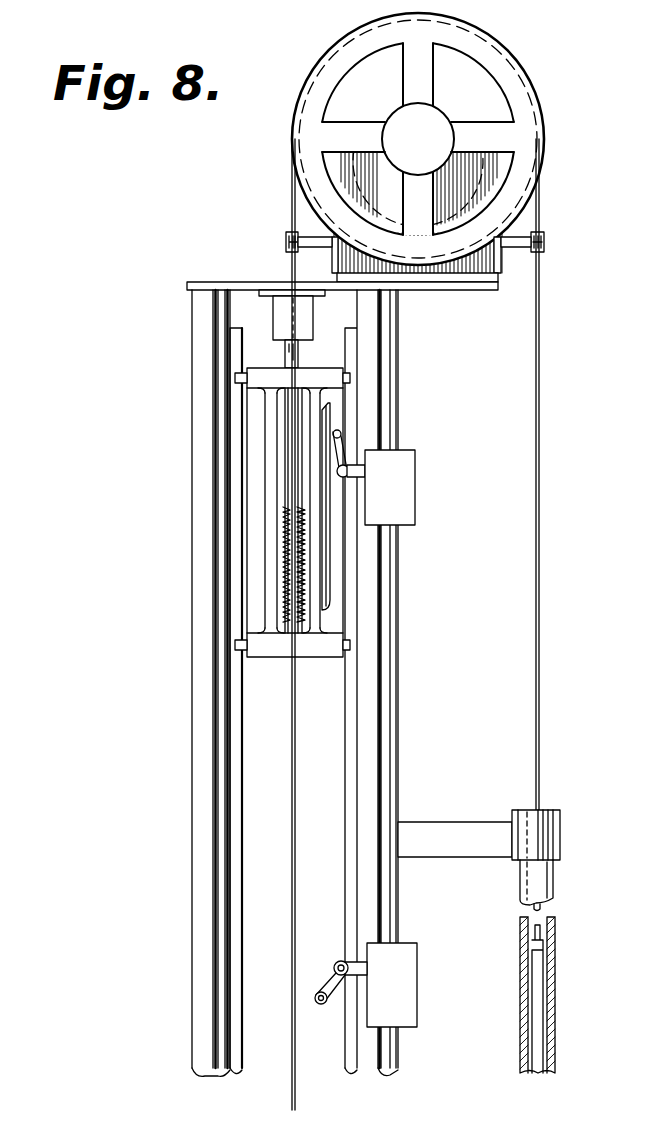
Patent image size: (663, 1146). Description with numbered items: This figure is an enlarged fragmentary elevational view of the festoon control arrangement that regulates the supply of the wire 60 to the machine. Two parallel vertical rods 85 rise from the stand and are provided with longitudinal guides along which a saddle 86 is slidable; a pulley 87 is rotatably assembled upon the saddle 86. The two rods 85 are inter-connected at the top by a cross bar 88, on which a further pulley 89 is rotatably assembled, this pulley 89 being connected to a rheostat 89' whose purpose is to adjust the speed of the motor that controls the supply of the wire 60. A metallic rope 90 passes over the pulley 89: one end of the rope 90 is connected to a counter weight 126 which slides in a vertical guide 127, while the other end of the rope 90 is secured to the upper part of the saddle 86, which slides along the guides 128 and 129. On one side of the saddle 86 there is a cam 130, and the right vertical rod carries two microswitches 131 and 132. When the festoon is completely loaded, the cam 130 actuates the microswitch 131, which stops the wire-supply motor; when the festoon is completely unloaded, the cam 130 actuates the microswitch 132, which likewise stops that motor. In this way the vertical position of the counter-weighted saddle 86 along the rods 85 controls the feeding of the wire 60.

The wire 60 is at (292, 1097).
The vertical rods 85 is at (202, 467).
The saddle 86 is at (267, 542).
The pulley 87 is at (283, 568).
The cross bar 88 is at (257, 282).
The pulley 89 is at (419, 139).
The rheostat 89' is at (362, 188).
The metallic rope 90 is at (539, 433).
The counter weight 126 is at (535, 998).
The vertical guide 127 is at (556, 878).
The guide 128 is at (243, 735).
The guide 129 is at (345, 786).
The cam 130 is at (332, 572).
The microswitch 131 is at (413, 457).
The microswitch 132 is at (405, 960).